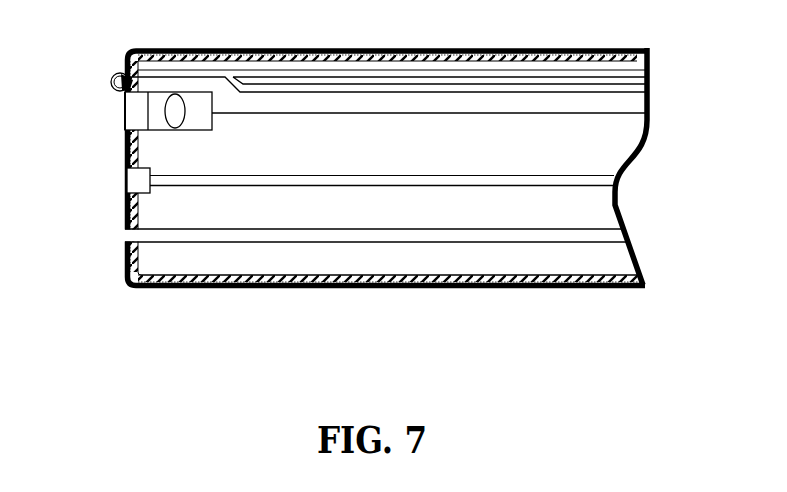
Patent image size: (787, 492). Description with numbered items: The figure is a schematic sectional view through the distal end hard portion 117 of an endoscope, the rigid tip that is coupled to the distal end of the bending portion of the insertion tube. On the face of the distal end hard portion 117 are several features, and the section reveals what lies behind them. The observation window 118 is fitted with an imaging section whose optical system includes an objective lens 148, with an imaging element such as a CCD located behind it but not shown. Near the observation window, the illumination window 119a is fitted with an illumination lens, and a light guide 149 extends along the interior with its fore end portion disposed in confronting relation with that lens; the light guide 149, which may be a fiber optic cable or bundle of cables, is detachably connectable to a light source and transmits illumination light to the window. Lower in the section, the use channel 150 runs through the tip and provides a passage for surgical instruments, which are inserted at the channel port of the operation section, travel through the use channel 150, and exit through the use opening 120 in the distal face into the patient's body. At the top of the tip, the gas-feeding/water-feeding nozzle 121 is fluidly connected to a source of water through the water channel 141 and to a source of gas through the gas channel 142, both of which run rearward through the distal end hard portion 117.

The distal end hard portion 117 is at (207, 334).
The observation window 118 is at (125, 110).
The illumination window 119a is at (127, 182).
The use opening 120 is at (127, 237).
The gas-feeding/water-feeding nozzle 121 is at (112, 79).
The water channel 141 is at (648, 90).
The gas channel 142 is at (648, 73).
The objective lens 148 is at (185, 107).
The light guides 149 is at (438, 187).
The use channel 150 is at (473, 243).